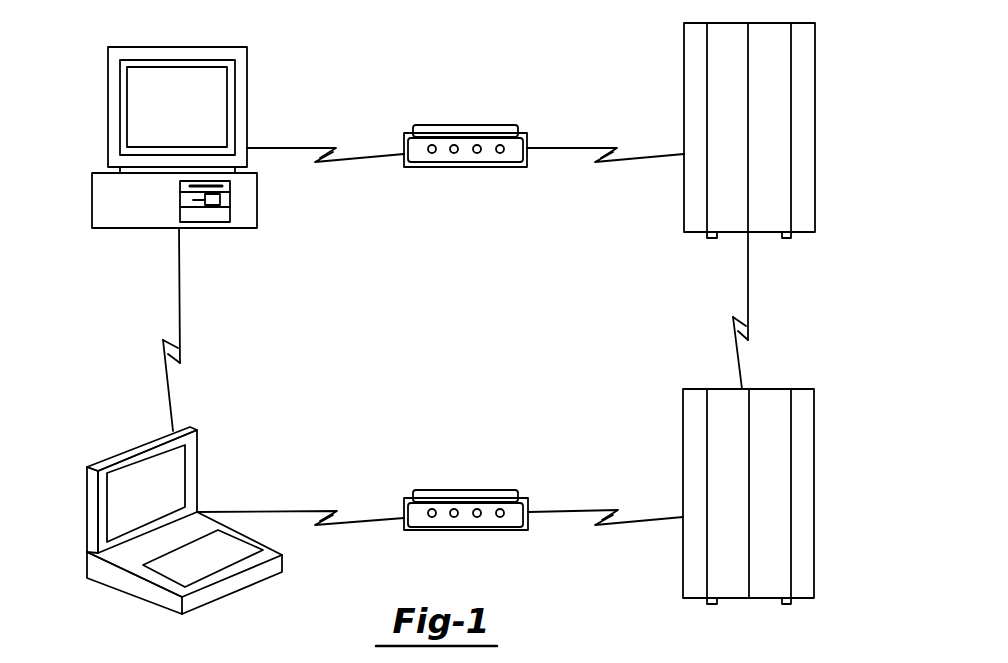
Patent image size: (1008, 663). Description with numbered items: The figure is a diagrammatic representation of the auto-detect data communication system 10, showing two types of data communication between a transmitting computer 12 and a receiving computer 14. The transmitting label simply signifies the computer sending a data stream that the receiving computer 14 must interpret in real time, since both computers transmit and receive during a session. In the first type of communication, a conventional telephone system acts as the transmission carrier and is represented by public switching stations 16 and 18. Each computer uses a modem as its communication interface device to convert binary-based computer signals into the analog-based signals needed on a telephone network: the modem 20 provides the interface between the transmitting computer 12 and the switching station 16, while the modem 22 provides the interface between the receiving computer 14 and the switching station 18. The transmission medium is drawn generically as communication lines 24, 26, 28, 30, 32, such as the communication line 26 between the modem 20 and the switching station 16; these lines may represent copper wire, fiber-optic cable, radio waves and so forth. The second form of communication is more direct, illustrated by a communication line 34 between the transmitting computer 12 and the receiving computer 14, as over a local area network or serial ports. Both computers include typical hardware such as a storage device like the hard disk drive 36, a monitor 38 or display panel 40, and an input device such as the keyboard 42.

The auto-detect data communication system 10 is at (94, 340).
The transmitting computer 12 is at (177, 144).
The receiving computer 14 is at (159, 511).
The switching station 16 is at (812, 152).
The switching station 18 is at (815, 459).
The modem 20 is at (455, 125).
The modem 22 is at (455, 490).
The communication line 24 is at (298, 147).
The communication line 26 is at (580, 148).
The communication line 28 is at (734, 333).
The communication line 30 is at (576, 511).
The communication line 32 is at (340, 522).
The communication line 34 is at (183, 333).
The hard disk drive 36 is at (223, 215).
The monitor 38 is at (183, 78).
The display panel 40 is at (149, 476).
The keyboard 42 is at (215, 566).